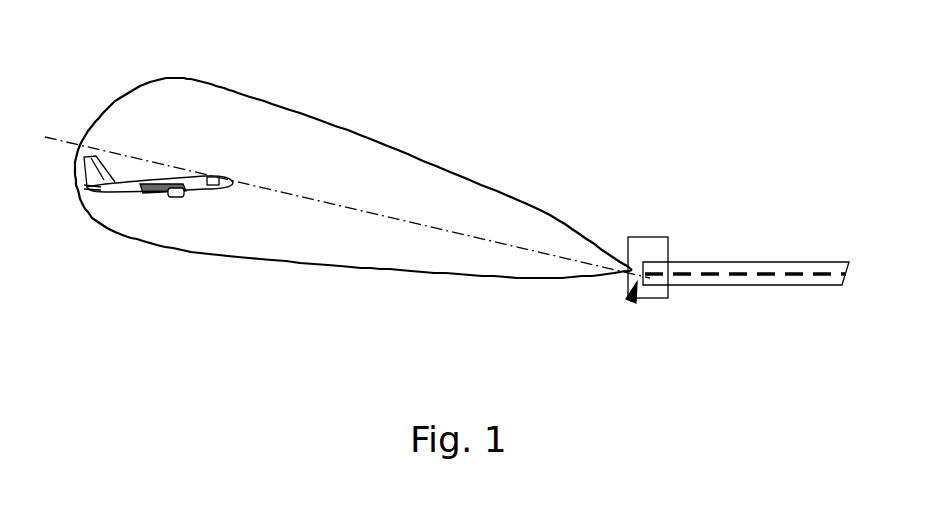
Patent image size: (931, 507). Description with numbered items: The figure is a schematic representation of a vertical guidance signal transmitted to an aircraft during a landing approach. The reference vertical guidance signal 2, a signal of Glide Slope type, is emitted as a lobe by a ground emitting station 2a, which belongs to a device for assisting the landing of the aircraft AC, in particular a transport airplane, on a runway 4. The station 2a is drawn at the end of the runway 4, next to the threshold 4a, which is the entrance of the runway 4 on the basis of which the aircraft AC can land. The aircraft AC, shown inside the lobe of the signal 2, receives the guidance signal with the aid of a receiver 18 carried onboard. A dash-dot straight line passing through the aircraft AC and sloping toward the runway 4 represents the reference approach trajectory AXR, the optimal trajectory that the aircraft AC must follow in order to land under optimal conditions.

The reference approach trajectory AXR is at (62, 138).
The receiver 18 is at (217, 170).
The reference vertical guidance signal 2 is at (373, 140).
The aircraft AC is at (120, 196).
The ground emitting station 2a is at (645, 237).
The runway 4 is at (765, 262).
The threshold of the runway 4a is at (631, 302).